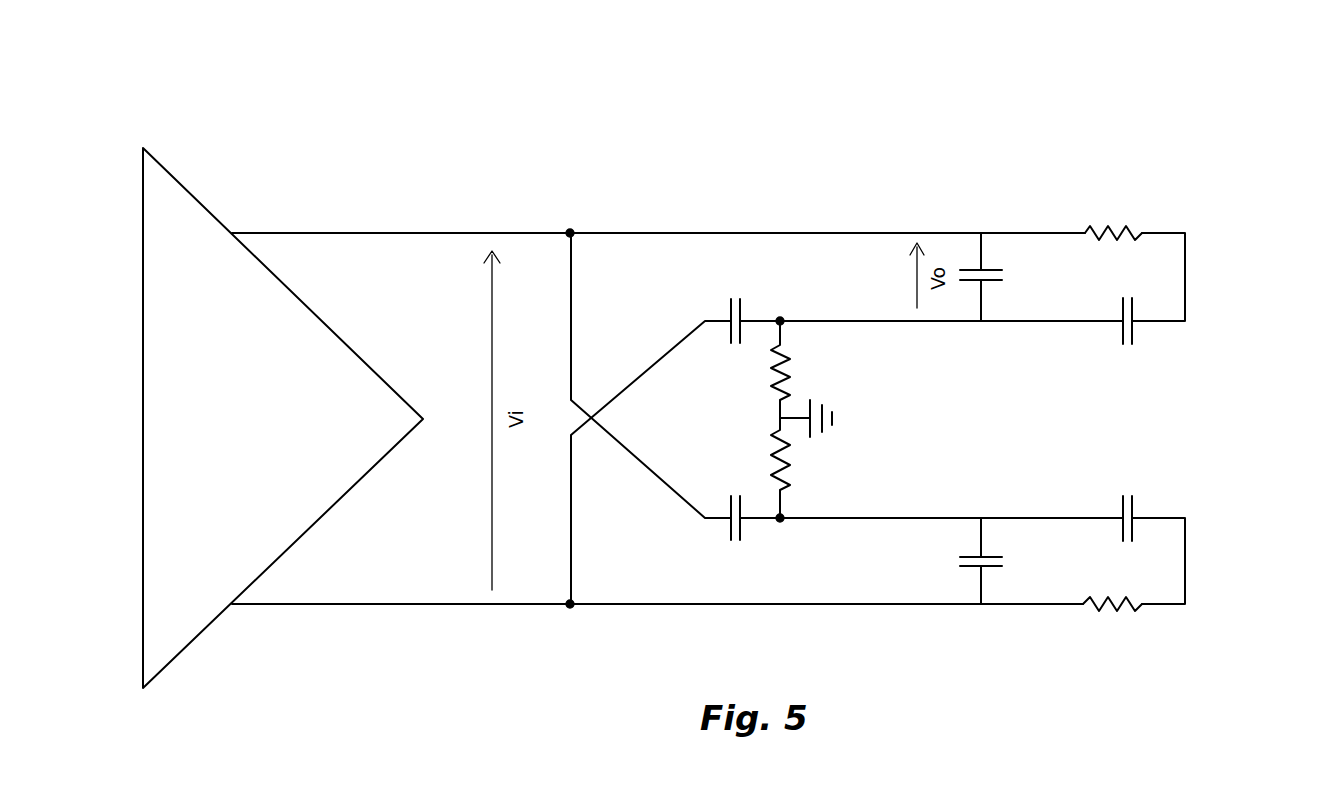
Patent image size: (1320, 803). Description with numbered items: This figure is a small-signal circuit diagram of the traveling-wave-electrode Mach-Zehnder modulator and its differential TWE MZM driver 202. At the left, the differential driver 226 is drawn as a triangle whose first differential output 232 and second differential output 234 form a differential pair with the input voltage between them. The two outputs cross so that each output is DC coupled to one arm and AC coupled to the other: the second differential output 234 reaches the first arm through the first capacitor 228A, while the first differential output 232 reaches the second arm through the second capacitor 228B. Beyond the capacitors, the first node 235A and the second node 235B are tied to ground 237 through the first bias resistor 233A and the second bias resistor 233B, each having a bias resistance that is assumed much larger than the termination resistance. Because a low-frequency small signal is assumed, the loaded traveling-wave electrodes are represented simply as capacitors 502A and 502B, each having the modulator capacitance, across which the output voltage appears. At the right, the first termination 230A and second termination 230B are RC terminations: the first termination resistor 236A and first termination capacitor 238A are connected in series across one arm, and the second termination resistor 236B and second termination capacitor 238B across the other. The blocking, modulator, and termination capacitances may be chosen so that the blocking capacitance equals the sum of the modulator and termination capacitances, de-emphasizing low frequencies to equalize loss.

The differential TWE MZM driver 202 is at (657, 68).
The differential driver 226 is at (266, 432).
The first capacitor 228A is at (730, 305).
The second capacitor 228B is at (730, 533).
The first termination 230A is at (1200, 225).
The second termination 230B is at (1200, 612).
The first differential output 232 is at (570, 260).
The first bias resistor 233A is at (790, 398).
The second bias resistor 233B is at (790, 443).
The second differential output 234 is at (570, 578).
The first node 235A is at (778, 316).
The second node 235B is at (778, 522).
The first termination resistor 236A is at (1093, 228).
The second termination resistor 236B is at (1093, 610).
The ground 237 is at (835, 415).
The first termination capacitor 238A is at (1112, 333).
The second termination capacitor 238B is at (1112, 505).
The capacitor 502A is at (972, 270).
The capacitor 502B is at (972, 566).